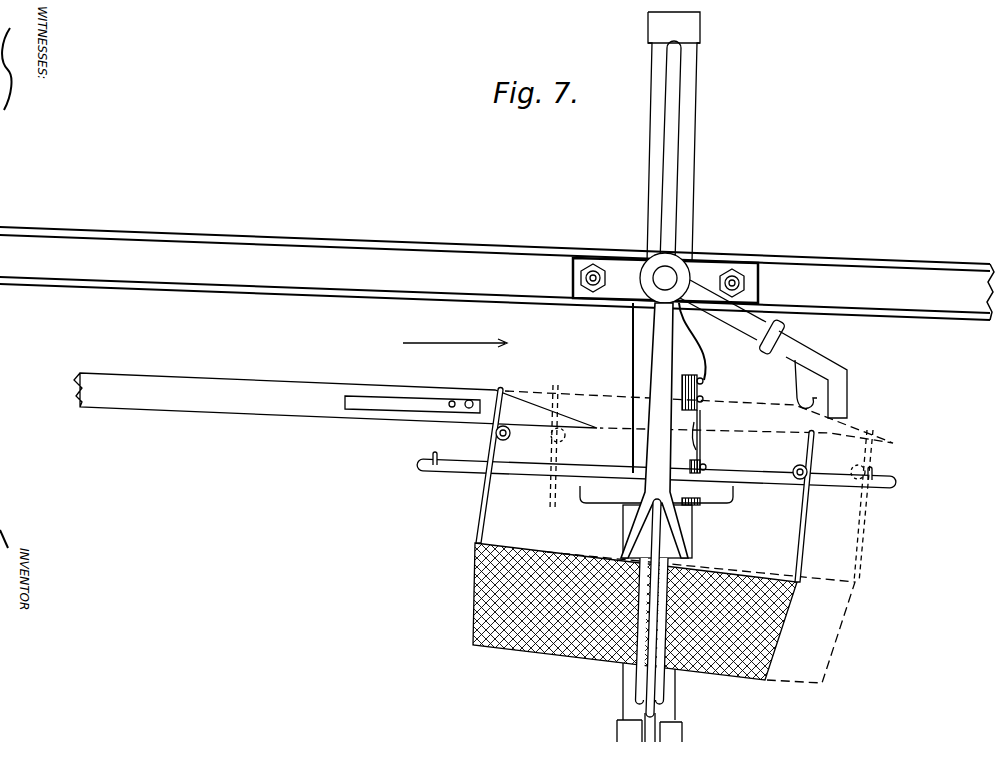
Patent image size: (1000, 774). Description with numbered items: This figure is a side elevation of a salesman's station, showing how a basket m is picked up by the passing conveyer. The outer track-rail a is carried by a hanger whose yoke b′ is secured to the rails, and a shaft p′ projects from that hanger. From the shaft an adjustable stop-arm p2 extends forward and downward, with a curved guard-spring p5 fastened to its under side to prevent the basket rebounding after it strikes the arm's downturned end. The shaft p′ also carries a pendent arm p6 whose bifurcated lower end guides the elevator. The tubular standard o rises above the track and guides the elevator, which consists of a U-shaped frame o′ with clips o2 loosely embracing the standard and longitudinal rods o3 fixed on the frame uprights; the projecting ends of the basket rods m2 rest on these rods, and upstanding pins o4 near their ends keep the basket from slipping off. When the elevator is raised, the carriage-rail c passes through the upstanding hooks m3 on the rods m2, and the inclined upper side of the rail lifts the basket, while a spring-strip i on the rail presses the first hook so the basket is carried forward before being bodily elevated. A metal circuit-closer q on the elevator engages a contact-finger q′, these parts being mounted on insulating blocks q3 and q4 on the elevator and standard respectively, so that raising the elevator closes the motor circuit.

The outer rail a is at (359, 250).
The yoke b′ is at (682, 137).
The shaft p′ is at (668, 276).
The stop-arm p2 is at (813, 371).
The guard-spring p5 is at (791, 385).
The pendent arm p6 is at (654, 348).
The carriage-rail c is at (301, 396).
The spring-strip i is at (409, 402).
The basket m is at (642, 611).
The rod m2 is at (798, 472).
The hook m3 is at (503, 389).
The tubular standard o is at (632, 380).
The U-shaped frame o′ is at (643, 690).
The clip o2 is at (692, 542).
The longitudinal rod o3 is at (462, 473).
The upstanding pin o4 is at (432, 457).
The metal piece q is at (704, 463).
The contact-finger q′ is at (701, 421).
The block of insulation q3 is at (701, 500).
The block of insulation q4 is at (702, 381).